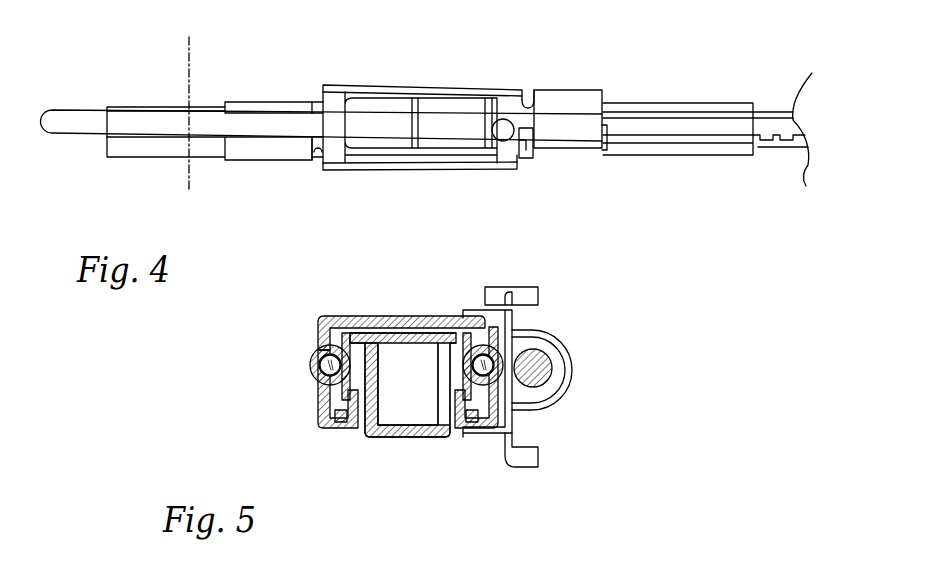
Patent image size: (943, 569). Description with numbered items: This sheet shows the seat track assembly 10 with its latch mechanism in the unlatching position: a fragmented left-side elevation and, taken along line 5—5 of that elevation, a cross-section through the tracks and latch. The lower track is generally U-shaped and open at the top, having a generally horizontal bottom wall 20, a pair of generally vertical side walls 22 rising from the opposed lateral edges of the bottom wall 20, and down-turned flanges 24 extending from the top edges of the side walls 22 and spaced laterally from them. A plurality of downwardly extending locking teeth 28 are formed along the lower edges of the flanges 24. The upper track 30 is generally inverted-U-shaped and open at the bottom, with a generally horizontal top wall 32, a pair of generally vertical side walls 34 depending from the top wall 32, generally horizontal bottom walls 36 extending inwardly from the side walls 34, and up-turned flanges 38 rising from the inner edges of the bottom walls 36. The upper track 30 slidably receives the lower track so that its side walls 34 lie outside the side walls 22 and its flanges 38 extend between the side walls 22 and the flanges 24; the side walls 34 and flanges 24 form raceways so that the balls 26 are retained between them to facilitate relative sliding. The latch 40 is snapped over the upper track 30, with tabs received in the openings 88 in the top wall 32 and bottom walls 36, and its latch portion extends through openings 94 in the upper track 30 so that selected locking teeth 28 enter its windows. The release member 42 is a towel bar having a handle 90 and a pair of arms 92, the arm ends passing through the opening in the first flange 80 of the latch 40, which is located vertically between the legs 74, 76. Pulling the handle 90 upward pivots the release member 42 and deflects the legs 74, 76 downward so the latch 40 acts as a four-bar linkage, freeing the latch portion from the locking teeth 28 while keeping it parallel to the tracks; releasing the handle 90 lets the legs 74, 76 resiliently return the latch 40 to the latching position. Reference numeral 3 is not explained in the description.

In FIG. 4, the rail 3 is at (784, 110).
In FIG. 5, the rail 3 is at (390, 438).
In FIG. 4, the section line 5— 5 is at (219, 37).
In FIG. 4, the seat track assembly 10 is at (582, 42).
In FIG. 5, the seat track assembly 10 is at (634, 326).
In FIG. 5, the bottom wall 20 is at (408, 444).
In FIG. 5, the side walls 22 is at (398, 400).
In FIG. 5, the down-turned flanges 24 is at (318, 412).
In FIG. 5, the balls 26 is at (322, 360).
In FIG. 4, the locking teeth 28 is at (786, 148).
In FIG. 4, the upper track 30 is at (648, 102).
In FIG. 5, the upper track 30 is at (366, 315).
In FIG. 5, the top wall 32 is at (350, 315).
In FIG. 5, the side walls 34 is at (310, 378).
In FIG. 5, the bottom walls 36 is at (332, 428).
In FIG. 5, the up-turned flanges 38 is at (344, 414).
In FIG. 4, the latch 40 is at (448, 84).
In FIG. 5, the latch 40 is at (513, 288).
In FIG. 4, the release member 42 is at (66, 108).
In FIG. 5, the release member 42 is at (553, 367).
In FIG. 5, the leg 74 is at (540, 290).
In FIG. 5, the leg 76 is at (542, 460).
In FIG. 5, the first flange 80 is at (544, 332).
In FIG. 5, the openings 88 is at (458, 308).
In FIG. 4, the handle 90 is at (42, 136).
In FIG. 4, the arms 92 is at (292, 162).
In FIG. 5, the arms 92 is at (556, 392).
In FIG. 4, the openings 94 is at (605, 150).